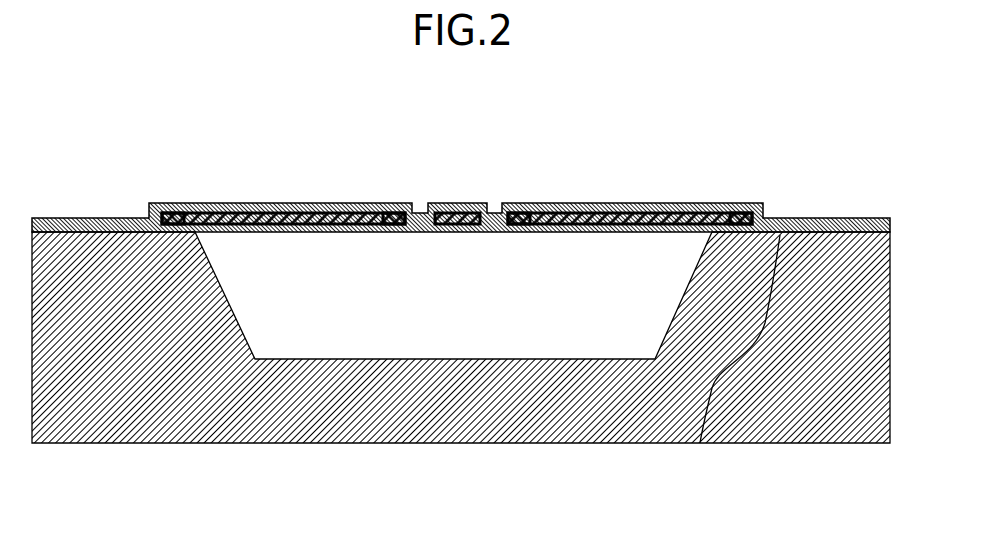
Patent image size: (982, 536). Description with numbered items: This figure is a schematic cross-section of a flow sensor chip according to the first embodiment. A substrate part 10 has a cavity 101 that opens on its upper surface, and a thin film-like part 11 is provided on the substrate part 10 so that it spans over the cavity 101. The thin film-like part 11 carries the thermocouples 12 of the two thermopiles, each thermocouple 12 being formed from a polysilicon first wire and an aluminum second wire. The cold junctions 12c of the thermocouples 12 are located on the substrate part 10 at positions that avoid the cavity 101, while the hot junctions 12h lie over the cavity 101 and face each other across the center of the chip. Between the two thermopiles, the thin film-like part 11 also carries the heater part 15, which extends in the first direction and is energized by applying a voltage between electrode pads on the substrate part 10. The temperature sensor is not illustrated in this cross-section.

The substrate part 10 is at (422, 443).
The thin film-like part 11 is at (700, 443).
The thermocouple 12 is at (265, 203).
The cold junction 12c is at (175, 203).
The hot junction 12h is at (390, 203).
The heater part 15 is at (457, 203).
The cavity 101 is at (440, 324).